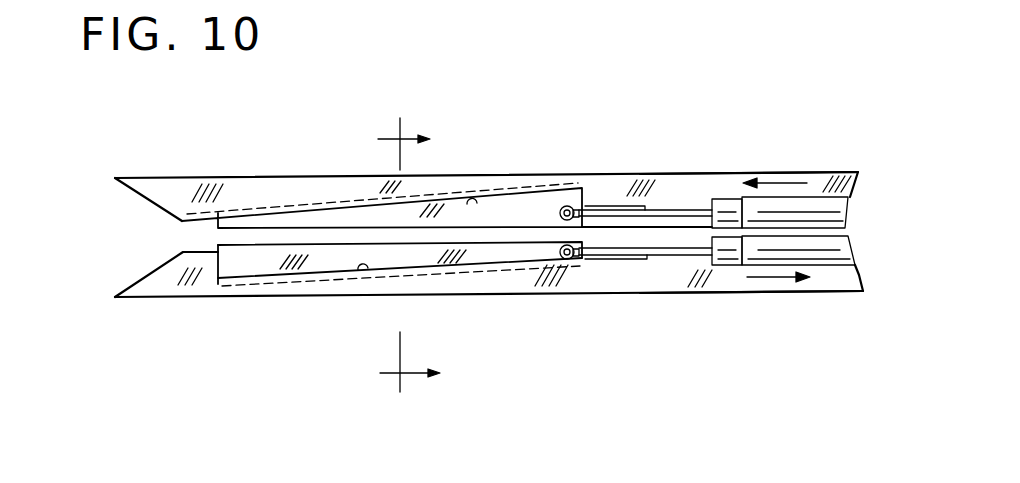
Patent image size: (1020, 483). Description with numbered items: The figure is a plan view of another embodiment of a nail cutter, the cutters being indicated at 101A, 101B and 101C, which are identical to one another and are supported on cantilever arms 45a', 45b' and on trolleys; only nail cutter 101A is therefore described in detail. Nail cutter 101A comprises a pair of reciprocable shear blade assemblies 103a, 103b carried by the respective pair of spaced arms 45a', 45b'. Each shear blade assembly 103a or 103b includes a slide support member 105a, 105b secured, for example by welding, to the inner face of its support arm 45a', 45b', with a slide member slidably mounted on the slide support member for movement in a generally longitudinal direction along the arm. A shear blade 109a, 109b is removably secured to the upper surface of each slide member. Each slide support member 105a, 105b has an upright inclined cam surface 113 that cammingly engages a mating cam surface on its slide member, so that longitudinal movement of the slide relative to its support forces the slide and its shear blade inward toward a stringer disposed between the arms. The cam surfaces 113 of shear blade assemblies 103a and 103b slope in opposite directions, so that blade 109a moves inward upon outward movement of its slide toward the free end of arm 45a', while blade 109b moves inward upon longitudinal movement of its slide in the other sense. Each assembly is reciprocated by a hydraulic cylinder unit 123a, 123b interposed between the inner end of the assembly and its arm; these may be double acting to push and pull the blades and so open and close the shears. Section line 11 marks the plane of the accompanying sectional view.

The slide support member 105a is at (244, 189).
The slide support member 105b is at (607, 276).
The shear blade 109a is at (338, 218).
The shear blade 109b is at (330, 258).
The shear blade assembly 103a is at (505, 213).
The shear blade assembly 103b is at (489, 250).
The cam surface 113 is at (478, 205).
The cantilever arm 45a' is at (749, 138).
The cantilever arm 45b' is at (751, 324).
The hydraulic cylinder unit 123a is at (812, 197).
The hydraulic cylinder unit 123b is at (828, 265).
The nail cutter 101A is at (295, 303).
The nail cutter 101B is at (490, 294).
The nail cutter 101C is at (739, 292).
The section line 11 is at (405, 257).